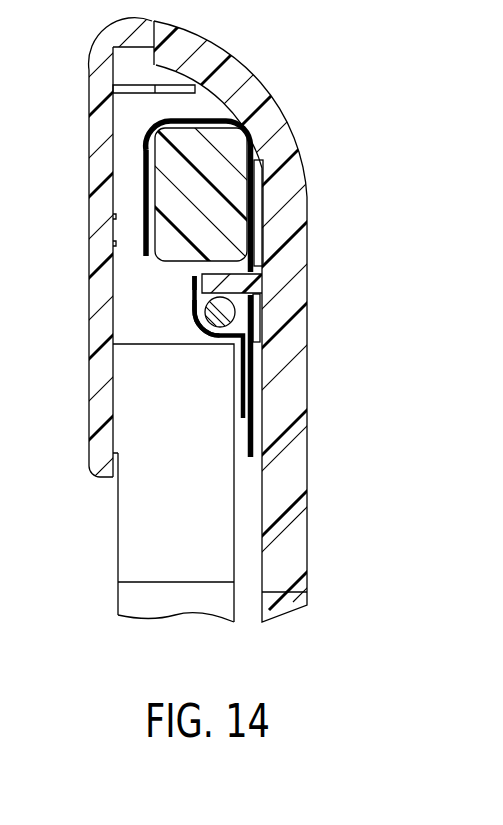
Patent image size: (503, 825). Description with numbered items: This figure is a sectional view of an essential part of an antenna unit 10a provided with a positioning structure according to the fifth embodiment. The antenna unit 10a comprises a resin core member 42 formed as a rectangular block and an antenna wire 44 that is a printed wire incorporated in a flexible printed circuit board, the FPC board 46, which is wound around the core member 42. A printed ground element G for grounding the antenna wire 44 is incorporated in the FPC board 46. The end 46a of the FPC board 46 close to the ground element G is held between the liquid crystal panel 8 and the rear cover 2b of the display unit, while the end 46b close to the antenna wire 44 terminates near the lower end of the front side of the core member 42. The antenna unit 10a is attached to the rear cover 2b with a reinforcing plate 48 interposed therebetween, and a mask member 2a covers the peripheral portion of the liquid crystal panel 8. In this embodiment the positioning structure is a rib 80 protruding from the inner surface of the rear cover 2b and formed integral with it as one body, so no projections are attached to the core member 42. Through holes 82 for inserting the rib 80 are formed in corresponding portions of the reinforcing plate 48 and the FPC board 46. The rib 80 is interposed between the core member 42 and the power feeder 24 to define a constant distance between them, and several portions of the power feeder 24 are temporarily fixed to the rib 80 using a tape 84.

The mask member 2a is at (90, 238).
The rear cover 2b is at (298, 160).
The liquid crystal panel 8 is at (128, 555).
The antenna unit 10a is at (215, 110).
The power feeder 24 is at (194, 347).
The core member 42 is at (162, 197).
The antenna wire 44 is at (139, 388).
The FPC board 46 is at (139, 388).
The end of the FPC board 46a is at (250, 461).
The end of the FPC board 46b is at (146, 262).
The reinforcing plate 48 is at (257, 227).
The rib 80 is at (193, 276).
The through hole 82 is at (260, 293).
The tape 84 is at (190, 322).
The ground element G is at (247, 450).